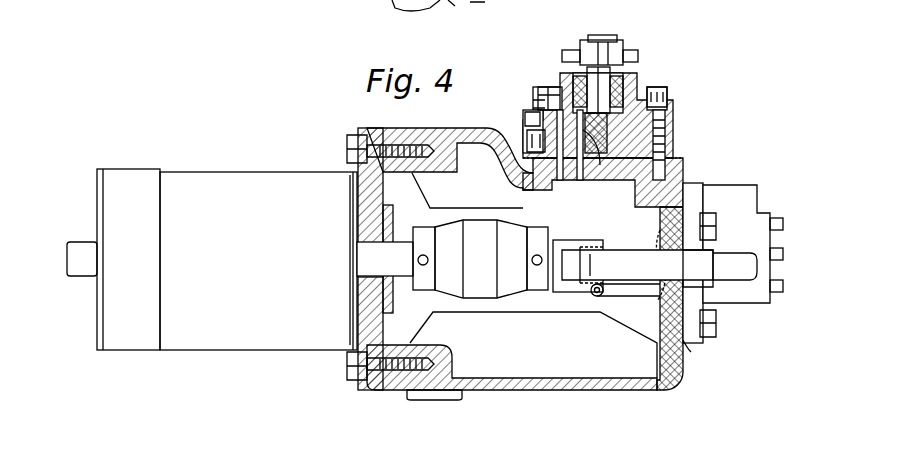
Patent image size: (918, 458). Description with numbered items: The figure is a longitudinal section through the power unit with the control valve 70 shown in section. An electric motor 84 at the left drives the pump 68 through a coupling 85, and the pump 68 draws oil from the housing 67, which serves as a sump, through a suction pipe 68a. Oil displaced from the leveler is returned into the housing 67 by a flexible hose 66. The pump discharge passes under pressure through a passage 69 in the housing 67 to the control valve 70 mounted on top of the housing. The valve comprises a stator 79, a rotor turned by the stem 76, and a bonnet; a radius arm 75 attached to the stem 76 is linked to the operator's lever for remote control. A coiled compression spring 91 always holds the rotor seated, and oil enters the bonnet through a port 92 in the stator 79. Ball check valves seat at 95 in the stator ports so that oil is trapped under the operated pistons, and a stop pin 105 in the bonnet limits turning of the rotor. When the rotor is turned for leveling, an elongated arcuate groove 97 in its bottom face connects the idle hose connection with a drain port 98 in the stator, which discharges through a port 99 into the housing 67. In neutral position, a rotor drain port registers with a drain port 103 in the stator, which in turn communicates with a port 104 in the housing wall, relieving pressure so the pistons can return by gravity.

The motor 84 is at (243, 182).
The coupling 85 is at (475, 225).
The housing 67 is at (482, 385).
The port 92 is at (678, 174).
The pump 68 is at (730, 190).
The suction pipe 68a is at (701, 353).
The flexible hose 66 is at (726, 256).
The passage 69 is at (626, 208).
The control valve 70 is at (650, 72).
The radius arm 75 is at (610, 46).
The stem 76 is at (582, 84).
The coiled compression spring 91 is at (556, 100).
The seat 95 is at (652, 96).
The stop pin 105 is at (538, 105).
The elongated arcuate groove 97 is at (534, 125).
The drain port 98 is at (533, 140).
The stator 79 is at (667, 135).
The port 99 is at (560, 176).
The drain port 103 is at (580, 176).
The port 104 is at (581, 176).